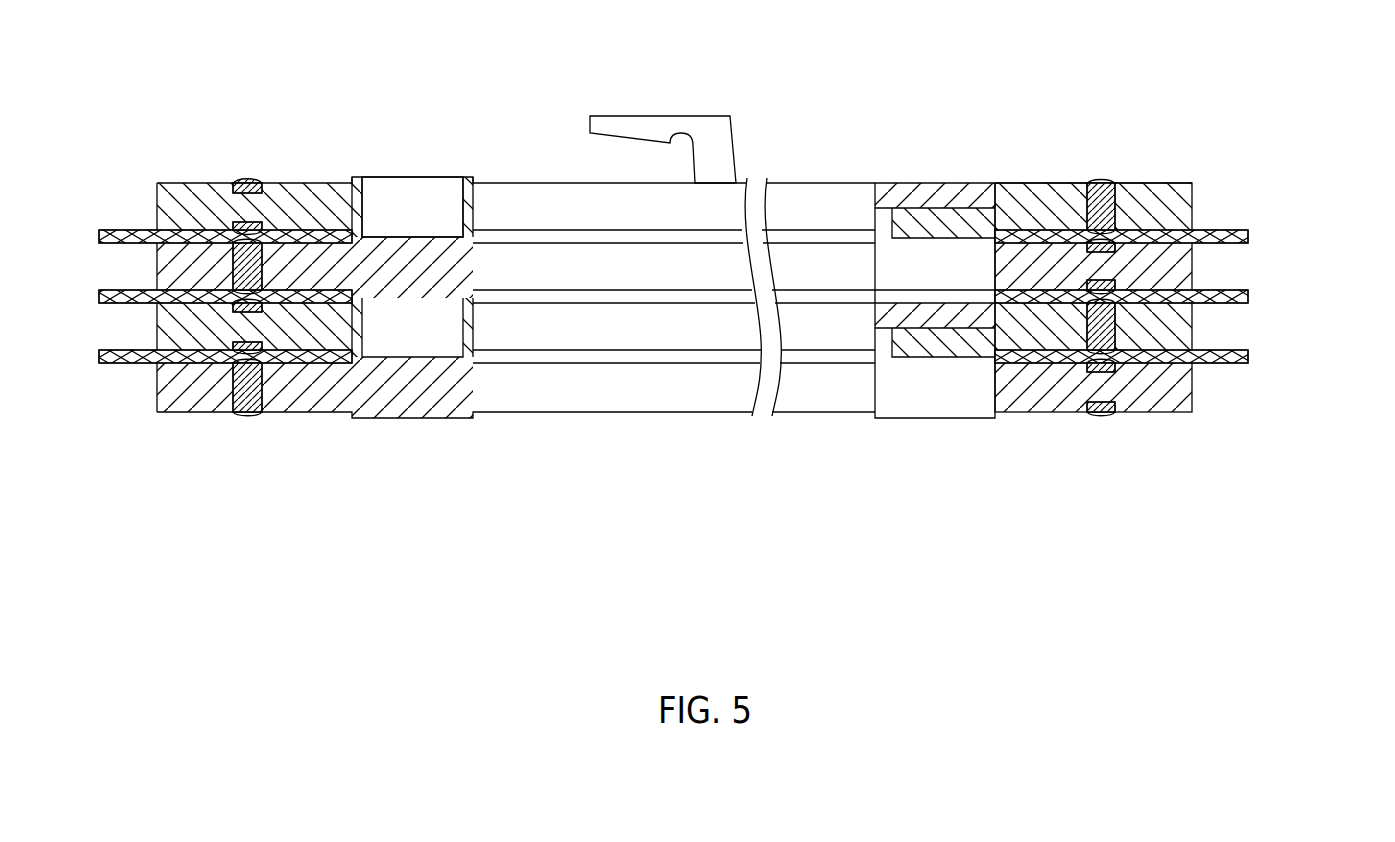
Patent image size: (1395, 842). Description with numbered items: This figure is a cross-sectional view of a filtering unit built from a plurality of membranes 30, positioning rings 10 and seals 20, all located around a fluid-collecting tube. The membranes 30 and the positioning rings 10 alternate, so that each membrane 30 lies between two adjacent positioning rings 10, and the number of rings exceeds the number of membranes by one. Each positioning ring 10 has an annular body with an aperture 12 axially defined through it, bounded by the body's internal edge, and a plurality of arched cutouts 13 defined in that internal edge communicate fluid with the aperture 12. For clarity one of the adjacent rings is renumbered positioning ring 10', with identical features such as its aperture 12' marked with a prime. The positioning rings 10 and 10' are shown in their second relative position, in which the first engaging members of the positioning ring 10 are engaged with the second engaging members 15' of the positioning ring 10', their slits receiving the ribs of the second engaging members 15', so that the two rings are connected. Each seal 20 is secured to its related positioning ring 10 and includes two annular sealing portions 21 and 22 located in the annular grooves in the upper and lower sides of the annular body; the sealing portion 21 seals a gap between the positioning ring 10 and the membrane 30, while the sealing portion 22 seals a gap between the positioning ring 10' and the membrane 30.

The positioning ring 10 is at (1157, 297).
The positioning ring 10' is at (1149, 250).
The aperture 12 is at (481, 331).
The aperture 12' is at (977, 233).
The arched cutout 13 is at (362, 199).
The second engaging member 15' is at (935, 215).
The seal 20 is at (714, 303).
The sealing portion 21 is at (1112, 366).
The sealing portion 22 is at (1110, 416).
The membrane 30 is at (1253, 238).